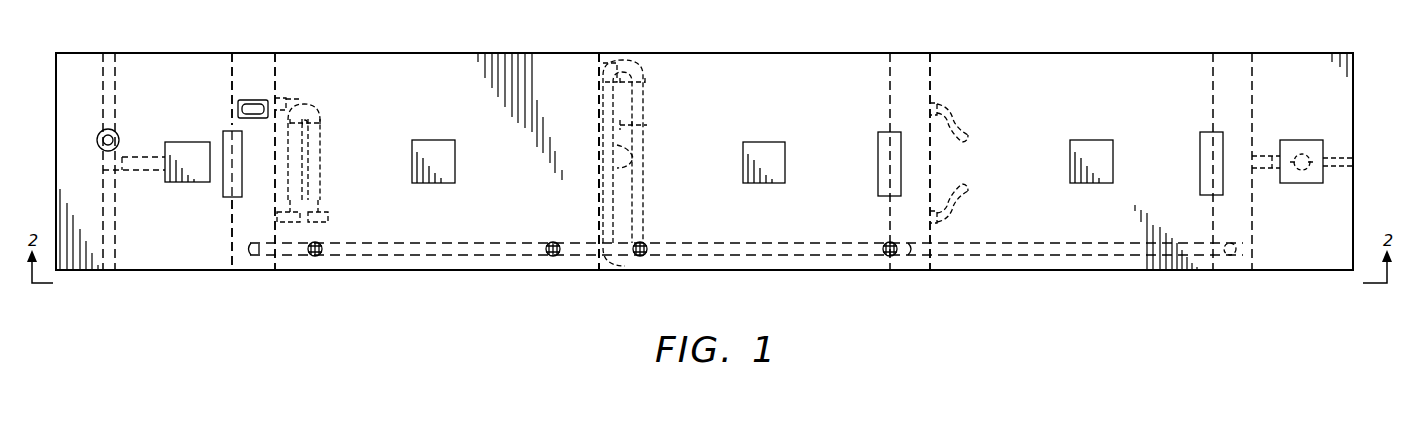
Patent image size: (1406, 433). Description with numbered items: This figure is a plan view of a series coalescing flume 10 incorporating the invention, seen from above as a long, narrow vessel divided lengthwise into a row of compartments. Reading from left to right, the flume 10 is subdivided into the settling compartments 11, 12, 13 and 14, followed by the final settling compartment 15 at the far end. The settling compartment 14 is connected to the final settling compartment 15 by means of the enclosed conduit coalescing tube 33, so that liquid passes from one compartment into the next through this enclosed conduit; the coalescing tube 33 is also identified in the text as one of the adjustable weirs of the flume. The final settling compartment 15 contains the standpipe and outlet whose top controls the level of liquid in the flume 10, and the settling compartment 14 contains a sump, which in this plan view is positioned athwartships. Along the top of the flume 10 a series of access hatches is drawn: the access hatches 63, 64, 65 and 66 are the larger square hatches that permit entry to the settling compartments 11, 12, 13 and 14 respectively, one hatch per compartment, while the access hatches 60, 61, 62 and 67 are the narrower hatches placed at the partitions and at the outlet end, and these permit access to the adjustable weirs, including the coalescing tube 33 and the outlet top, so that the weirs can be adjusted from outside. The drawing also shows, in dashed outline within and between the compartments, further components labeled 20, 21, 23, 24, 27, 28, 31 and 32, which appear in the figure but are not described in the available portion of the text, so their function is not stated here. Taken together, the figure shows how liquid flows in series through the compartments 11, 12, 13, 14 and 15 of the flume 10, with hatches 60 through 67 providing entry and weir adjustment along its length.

The flume 10 is at (1062, 48).
The settling compartment 11 is at (154, 250).
The settling compartment 12 is at (378, 225).
The settling compartment 13 is at (686, 230).
The settling compartment 14 is at (1032, 226).
The final settling compartment 15 is at (1300, 232).
The inlet fitting 20 is at (120, 134).
The partition wall 21 is at (232, 70).
The drain channel 23 is at (425, 243).
The recirculation conduit 24 is at (318, 140).
The recirculation conduit 27 is at (642, 128).
The filter housing 28 is at (250, 100).
The spray nozzle 31 is at (964, 208).
The partition wall 32 is at (890, 68).
The enclosed conduit coalescing tube 33 is at (1253, 155).
The access hatch 60 is at (222, 187).
The access hatch 61 is at (878, 157).
The access hatch 62 is at (1200, 156).
The access hatch 63 is at (190, 142).
The access hatch 64 is at (430, 140).
The access hatch 65 is at (766, 142).
The access hatch 66 is at (1096, 140).
The access hatch 67 is at (1307, 140).